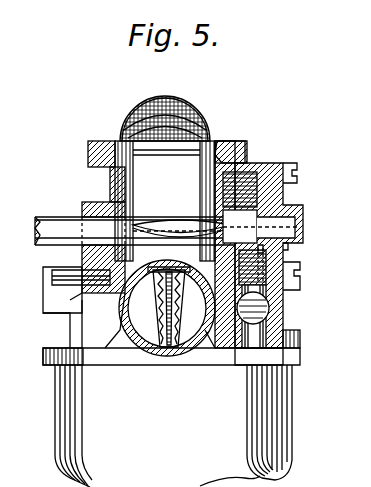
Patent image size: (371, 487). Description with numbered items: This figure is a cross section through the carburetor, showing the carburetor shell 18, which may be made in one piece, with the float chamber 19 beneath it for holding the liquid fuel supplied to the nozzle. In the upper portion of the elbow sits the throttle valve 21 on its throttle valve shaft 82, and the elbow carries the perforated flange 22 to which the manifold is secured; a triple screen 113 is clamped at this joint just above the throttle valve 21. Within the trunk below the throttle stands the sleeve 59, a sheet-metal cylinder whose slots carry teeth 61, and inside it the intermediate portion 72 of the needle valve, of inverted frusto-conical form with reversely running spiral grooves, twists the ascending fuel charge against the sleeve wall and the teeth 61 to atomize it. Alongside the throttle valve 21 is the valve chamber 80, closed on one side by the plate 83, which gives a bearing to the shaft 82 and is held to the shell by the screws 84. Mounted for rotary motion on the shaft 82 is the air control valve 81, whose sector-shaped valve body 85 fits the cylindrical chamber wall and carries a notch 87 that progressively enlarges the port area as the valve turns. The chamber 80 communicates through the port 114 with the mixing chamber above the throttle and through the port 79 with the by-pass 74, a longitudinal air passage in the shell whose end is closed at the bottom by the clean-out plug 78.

The perforated flange 22 is at (88, 145).
The triple screen 113 is at (195, 100).
The port 114 is at (207, 180).
The throttle valve shaft 82 is at (48, 216).
The throttle valve 21 is at (160, 224).
The valve chamber 80 is at (258, 162).
The plate 83 is at (284, 190).
The air control valve 81 is at (270, 211).
The screws 84 is at (292, 165).
The notch 87 is at (289, 248).
The sector-shaped valve body 85 is at (294, 272).
The port 79 is at (266, 300).
The by-pass 74 is at (262, 321).
The carburetor shell 18 is at (118, 340).
The intermediate portion of the needle valve 72 is at (172, 362).
The sleeve 59 is at (124, 305).
The teeth 61 is at (148, 362).
The clean-out plug 78 is at (244, 367).
The float chamber 19 is at (56, 459).